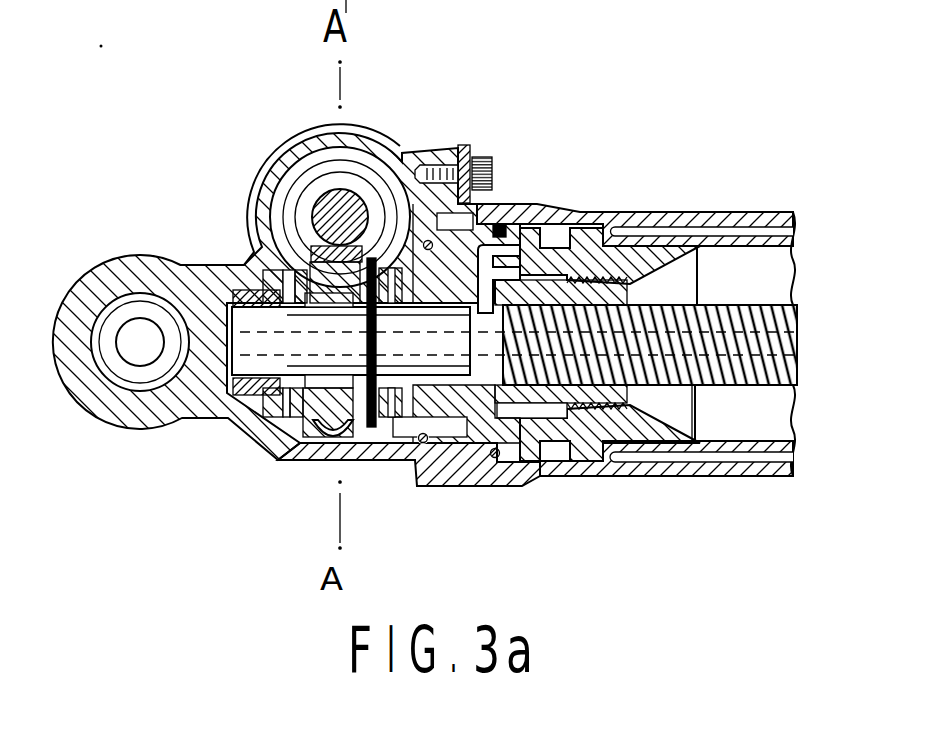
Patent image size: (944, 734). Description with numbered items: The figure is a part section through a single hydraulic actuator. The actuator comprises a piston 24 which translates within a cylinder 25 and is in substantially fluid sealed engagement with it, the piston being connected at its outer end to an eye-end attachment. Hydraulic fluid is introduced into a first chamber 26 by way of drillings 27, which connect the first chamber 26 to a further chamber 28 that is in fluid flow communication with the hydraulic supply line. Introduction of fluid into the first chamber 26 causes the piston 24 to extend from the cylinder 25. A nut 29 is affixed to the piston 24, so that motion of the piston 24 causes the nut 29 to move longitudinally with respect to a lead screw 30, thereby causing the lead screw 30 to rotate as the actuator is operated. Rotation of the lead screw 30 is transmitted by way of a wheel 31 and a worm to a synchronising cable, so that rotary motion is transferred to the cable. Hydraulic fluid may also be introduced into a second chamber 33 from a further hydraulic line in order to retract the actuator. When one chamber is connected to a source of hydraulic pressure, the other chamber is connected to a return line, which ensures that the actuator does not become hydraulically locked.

The piston 24 is at (585, 263).
The cylinder 25 is at (642, 212).
The first chamber 26 is at (492, 262).
The drillings 27 is at (453, 463).
The further chamber 28 is at (375, 437).
The nut 29 is at (590, 393).
The lead screw 30 is at (668, 392).
The wheel 31 is at (296, 455).
The second chamber 33 is at (715, 232).